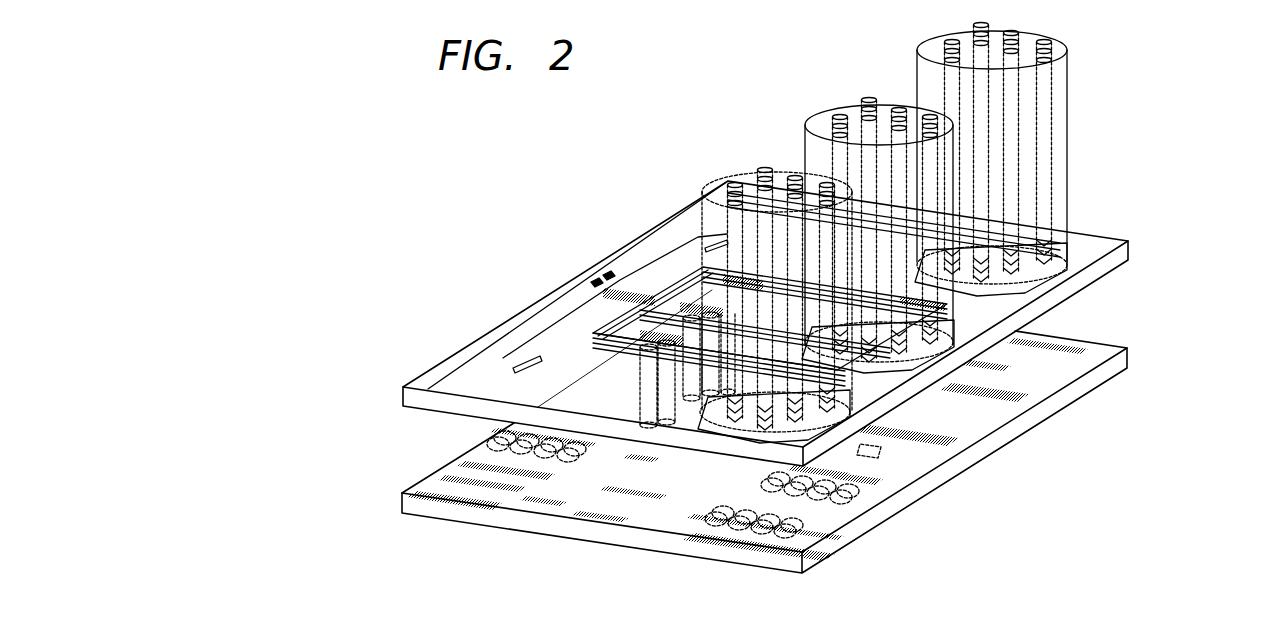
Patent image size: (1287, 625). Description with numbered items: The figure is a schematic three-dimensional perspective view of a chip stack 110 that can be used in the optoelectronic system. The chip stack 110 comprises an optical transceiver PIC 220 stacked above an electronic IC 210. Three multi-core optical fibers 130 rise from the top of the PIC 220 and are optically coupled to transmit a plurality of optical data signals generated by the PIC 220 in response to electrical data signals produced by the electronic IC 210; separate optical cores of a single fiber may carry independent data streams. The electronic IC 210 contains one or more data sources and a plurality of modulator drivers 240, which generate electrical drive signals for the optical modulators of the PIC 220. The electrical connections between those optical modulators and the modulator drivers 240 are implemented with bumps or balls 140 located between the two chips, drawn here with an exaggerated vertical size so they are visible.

The chip stack 110 is at (322, 432).
The multi-core optical fibers 130 is at (1068, 125).
The bumps or balls 140 is at (643, 391).
The electronic IC 210 is at (1130, 356).
The optical transceiver PIC 220 is at (1130, 250).
The modulator drivers 240 is at (622, 466).